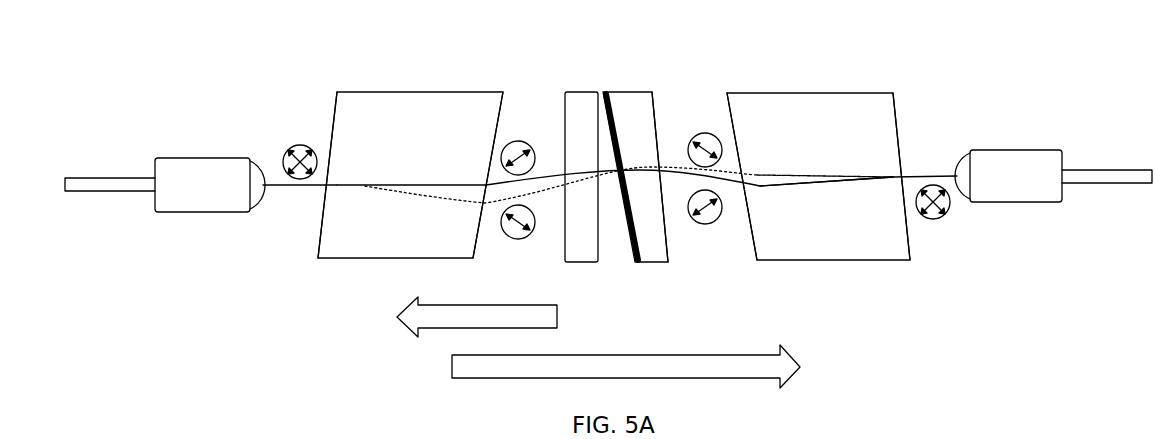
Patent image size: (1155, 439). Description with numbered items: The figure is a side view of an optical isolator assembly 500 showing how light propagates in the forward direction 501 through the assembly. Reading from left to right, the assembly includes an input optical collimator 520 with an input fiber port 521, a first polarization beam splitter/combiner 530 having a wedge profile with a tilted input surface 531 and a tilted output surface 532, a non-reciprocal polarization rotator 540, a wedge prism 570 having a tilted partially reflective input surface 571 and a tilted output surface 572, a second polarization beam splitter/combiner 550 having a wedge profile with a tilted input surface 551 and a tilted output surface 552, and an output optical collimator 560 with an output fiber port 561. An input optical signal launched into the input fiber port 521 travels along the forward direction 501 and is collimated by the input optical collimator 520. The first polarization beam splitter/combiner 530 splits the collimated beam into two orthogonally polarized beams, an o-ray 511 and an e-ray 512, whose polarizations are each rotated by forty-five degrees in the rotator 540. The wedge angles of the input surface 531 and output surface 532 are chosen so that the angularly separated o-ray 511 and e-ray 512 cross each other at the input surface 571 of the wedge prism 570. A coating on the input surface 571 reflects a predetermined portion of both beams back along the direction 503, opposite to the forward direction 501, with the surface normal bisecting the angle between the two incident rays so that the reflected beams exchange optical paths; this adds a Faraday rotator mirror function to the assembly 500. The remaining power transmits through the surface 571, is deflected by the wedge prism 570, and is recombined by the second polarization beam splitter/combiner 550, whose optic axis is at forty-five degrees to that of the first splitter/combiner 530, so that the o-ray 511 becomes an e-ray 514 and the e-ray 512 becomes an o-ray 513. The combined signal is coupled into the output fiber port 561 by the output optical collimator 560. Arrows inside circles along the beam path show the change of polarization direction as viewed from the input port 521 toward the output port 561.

The optical isolator assembly 500 is at (1046, 52).
The forward direction 501 is at (520, 378).
The direction opposite to forward direction 503 is at (428, 331).
The o-ray 511 is at (410, 183).
The e-ray 512 is at (410, 197).
The o-ray 513 is at (803, 172).
The e-ray 514 is at (810, 190).
The input optical collimator 520 is at (202, 191).
The input fiber port 521 is at (141, 170).
The first polarization beam splitter/combiner 530 is at (418, 175).
The tilted input surface 531 is at (333, 110).
The tilted output surface 532 is at (505, 108).
The non-reciprocal polarization rotator 540 is at (577, 242).
The second polarization beam splitter/combiner 550 is at (811, 181).
The tilted input surface 551 is at (723, 110).
The tilted output surface 552 is at (902, 108).
The output optical collimator 560 is at (1020, 187).
The output fiber port 561 is at (1137, 162).
The wedge prism 570 is at (632, 178).
The partially reflective input surface 571 is at (617, 110).
The tilted output surface 572 is at (658, 110).